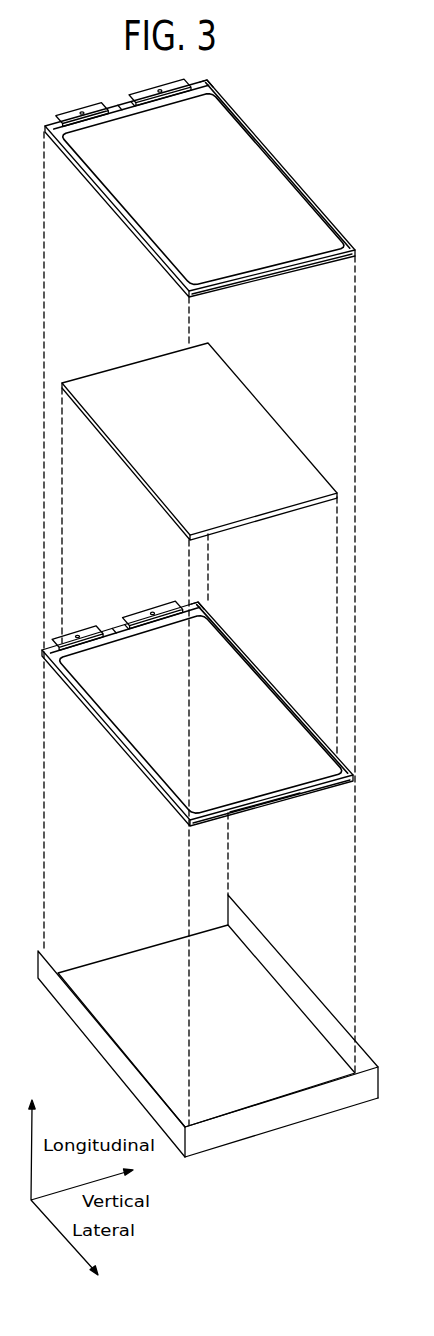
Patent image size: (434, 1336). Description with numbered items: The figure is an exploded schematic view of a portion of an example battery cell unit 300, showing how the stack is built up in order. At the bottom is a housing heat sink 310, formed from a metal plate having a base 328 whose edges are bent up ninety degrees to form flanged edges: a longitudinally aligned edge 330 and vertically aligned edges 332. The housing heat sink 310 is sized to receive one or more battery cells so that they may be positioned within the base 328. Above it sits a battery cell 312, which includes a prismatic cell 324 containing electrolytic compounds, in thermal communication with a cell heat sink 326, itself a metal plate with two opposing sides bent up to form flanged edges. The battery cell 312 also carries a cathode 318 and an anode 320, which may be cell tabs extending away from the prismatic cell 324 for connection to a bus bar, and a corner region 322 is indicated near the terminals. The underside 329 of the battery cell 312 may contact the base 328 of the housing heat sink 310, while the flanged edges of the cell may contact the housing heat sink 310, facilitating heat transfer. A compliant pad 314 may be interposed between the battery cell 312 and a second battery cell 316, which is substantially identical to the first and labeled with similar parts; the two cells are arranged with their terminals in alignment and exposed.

The battery cell unit 300 is at (361, 94).
The housing heat sink 310 is at (309, 950).
The battery cell 312 is at (293, 651).
The compliant pad 314 is at (288, 393).
The battery cell 316 is at (299, 136).
The cathode 318 is at (82, 108).
The anode 320 is at (155, 87).
The plate corner 322 is at (197, 78).
The prismatic cell 324 is at (214, 196).
The cell heat sink 326 is at (297, 264).
The base 328 is at (127, 968).
The underside 329 is at (256, 813).
The longitudinally aligned edge 330 is at (277, 1118).
The vertically aligned edges 332 is at (319, 998).